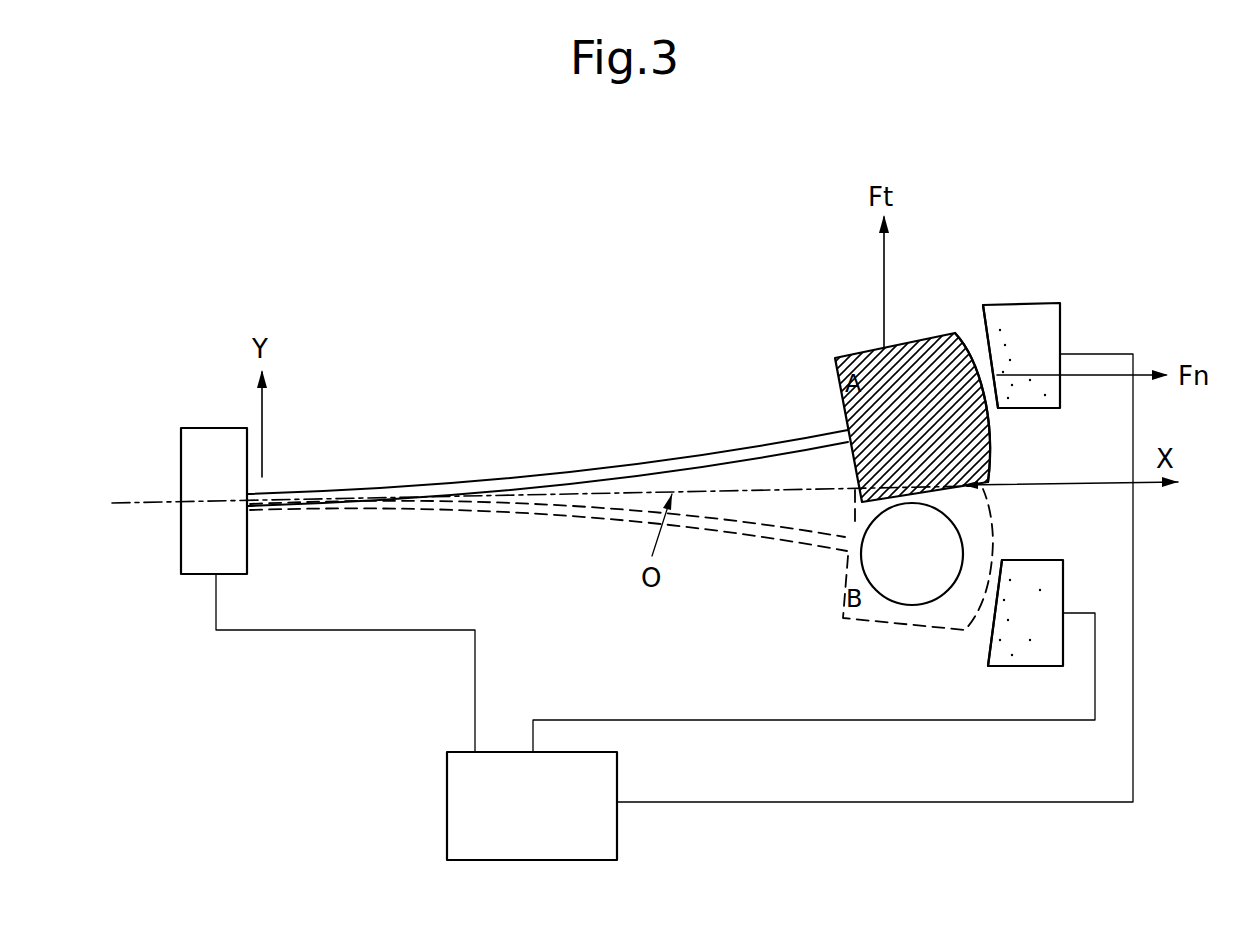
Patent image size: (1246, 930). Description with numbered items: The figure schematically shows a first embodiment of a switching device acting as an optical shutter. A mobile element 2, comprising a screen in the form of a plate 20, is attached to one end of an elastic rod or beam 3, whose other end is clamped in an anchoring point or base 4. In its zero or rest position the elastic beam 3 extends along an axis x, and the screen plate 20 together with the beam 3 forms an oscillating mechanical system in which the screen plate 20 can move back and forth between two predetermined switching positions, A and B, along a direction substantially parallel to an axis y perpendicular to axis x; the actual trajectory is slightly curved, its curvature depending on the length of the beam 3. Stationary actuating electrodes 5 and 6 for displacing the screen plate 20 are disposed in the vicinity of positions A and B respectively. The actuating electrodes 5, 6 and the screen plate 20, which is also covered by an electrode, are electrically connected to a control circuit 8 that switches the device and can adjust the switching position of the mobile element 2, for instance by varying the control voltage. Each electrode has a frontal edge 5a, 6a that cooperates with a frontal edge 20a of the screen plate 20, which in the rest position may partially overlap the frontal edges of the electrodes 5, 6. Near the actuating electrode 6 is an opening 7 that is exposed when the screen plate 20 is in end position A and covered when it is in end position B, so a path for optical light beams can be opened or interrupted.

The mobile element 2 is at (984, 422).
The elastic beam 3 is at (453, 478).
The anchoring point or base 4 is at (203, 440).
The actuating electrode 5 is at (1036, 313).
The frontal edge 5a is at (968, 325).
The actuating electrode 6 is at (1055, 588).
The frontal edge 6a is at (976, 650).
The opening 7 is at (911, 592).
The control circuit 8 is at (447, 806).
The screen plate 20 is at (850, 414).
The frontal edge 20a is at (1000, 451).